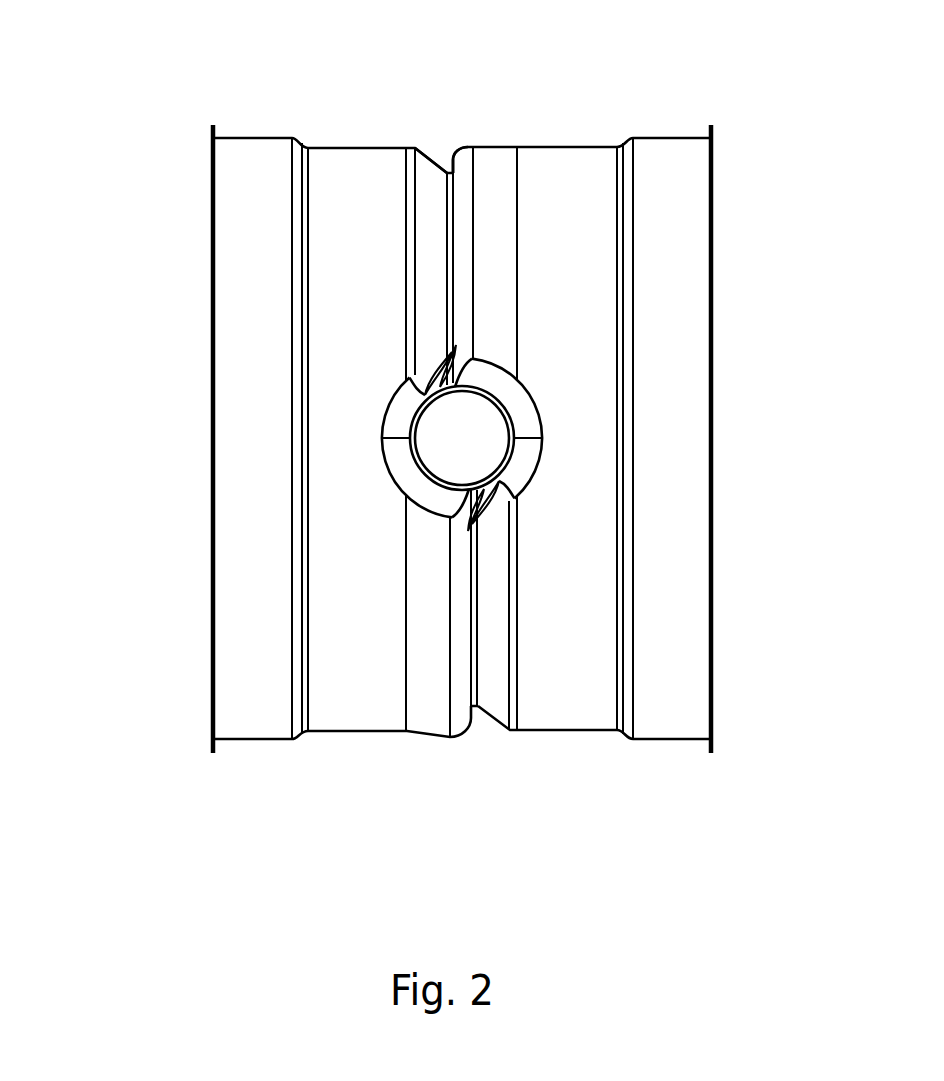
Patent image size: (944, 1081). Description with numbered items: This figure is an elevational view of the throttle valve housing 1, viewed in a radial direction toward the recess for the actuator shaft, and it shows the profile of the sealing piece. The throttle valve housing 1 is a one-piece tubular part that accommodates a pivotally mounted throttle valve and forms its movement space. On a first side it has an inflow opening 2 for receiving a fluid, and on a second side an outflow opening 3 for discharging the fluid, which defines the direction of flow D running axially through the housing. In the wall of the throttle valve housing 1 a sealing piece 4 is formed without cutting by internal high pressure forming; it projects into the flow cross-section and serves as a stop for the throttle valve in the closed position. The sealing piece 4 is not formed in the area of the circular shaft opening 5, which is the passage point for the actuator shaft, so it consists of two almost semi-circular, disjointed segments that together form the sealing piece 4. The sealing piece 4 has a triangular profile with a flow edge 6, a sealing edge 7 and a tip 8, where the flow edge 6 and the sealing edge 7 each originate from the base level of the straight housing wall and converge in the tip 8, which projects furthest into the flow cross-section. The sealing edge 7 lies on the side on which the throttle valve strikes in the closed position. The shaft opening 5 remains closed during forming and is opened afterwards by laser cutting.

The throttle valve housing 1 is at (264, 718).
The inflow opening 2 is at (180, 438).
The outflow opening 3 is at (743, 468).
The sealing piece 4 is at (455, 128).
The shaft opening 5 is at (462, 438).
The flow edge 6 is at (425, 150).
The sealing edge 7 is at (460, 142).
The tip 8 is at (450, 168).
The direction of flow D is at (180, 592).